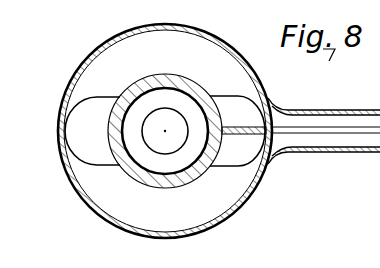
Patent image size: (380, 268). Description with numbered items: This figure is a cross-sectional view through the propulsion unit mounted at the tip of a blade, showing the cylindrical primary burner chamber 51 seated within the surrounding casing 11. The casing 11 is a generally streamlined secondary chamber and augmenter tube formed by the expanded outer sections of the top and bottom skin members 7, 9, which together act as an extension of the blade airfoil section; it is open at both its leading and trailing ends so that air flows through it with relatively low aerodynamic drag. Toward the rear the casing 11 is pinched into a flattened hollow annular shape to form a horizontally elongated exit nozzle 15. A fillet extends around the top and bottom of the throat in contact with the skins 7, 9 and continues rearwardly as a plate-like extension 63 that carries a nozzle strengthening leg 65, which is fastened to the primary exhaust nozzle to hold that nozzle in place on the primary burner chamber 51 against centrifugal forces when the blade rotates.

The top skin member 7 is at (318, 110).
The bottom skin member 9 is at (333, 152).
The casing 11 is at (198, 33).
The exit nozzle 15 is at (95, 96).
The primary burner chamber 51 is at (189, 83).
The plate-like extension 63 is at (275, 108).
The nozzle strengthening leg 65 is at (268, 170).